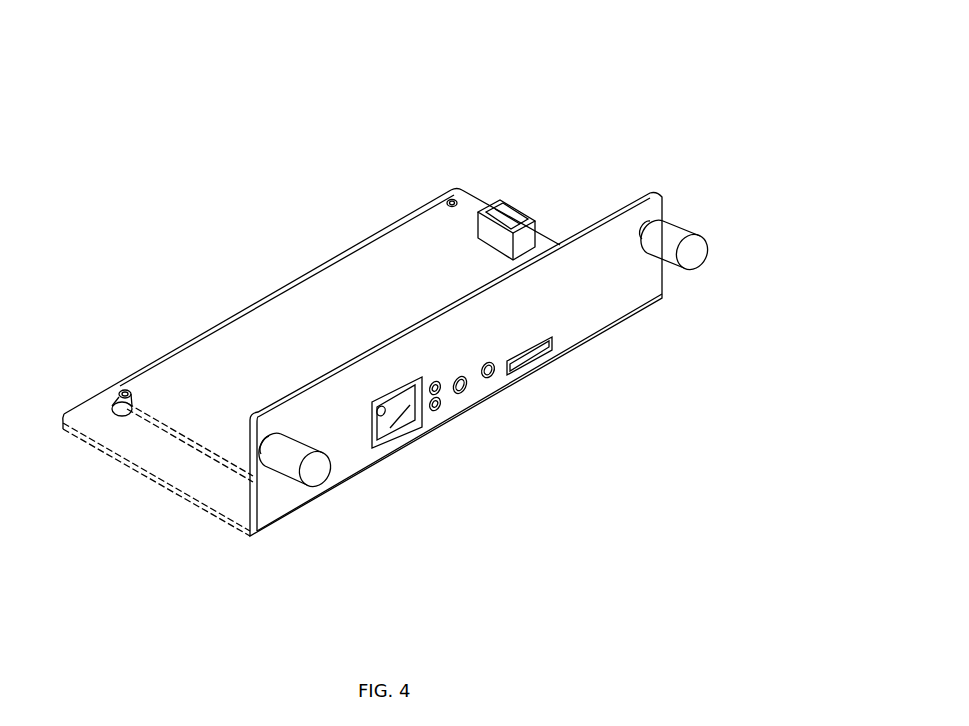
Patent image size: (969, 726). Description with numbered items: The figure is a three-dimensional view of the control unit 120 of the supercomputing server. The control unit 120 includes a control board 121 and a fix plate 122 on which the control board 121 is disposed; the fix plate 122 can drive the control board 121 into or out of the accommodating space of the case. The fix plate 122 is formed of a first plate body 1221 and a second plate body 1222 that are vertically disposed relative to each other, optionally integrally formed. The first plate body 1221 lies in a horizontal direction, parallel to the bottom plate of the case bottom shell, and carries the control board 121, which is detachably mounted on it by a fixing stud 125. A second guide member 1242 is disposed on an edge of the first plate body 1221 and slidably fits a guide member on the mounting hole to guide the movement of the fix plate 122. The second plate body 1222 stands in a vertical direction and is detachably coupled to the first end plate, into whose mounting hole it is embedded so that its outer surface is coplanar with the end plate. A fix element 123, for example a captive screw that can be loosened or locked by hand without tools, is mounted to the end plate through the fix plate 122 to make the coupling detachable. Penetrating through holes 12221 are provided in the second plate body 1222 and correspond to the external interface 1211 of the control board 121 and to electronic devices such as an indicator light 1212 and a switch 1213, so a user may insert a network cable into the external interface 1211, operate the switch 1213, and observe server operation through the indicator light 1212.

The control unit 120 is at (600, 90).
The control board 121 is at (407, 253).
The fix plate 122 is at (345, 610).
The first plate body 1221 is at (230, 490).
The second plate body 1222 is at (340, 433).
The through hole 12221 is at (400, 450).
The external interface 1211 is at (403, 413).
The indicator light 1212 is at (438, 405).
The switch 1213 is at (495, 364).
The fix element 123 is at (690, 254).
The fixing stud 125 is at (132, 418).
The second guide member 1242 is at (124, 451).